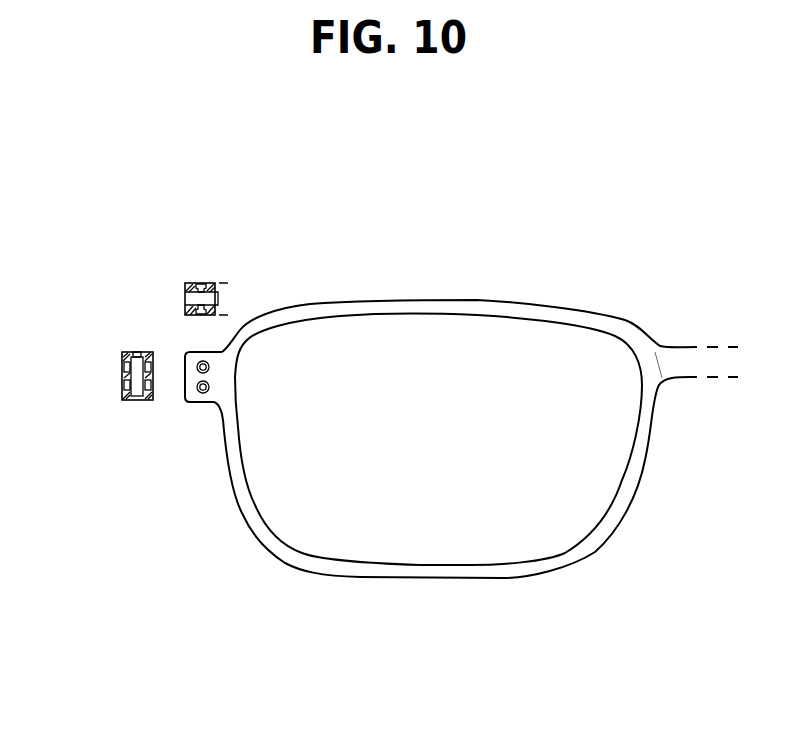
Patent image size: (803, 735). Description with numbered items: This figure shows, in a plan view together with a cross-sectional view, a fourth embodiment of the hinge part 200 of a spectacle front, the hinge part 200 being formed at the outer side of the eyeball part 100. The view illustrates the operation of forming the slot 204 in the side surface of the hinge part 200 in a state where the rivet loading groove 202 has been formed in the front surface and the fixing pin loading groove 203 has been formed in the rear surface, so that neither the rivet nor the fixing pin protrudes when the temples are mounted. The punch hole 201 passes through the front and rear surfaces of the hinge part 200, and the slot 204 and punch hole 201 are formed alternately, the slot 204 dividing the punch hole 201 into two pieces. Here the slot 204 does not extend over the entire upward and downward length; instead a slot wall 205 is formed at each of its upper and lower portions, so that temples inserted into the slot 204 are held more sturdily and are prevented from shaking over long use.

The eyeball part 100 is at (444, 304).
The hinge part 200 is at (194, 397).
The punch hole 201 is at (227, 285).
The rivet loading groove 202 is at (202, 283).
The fixing pin loading groove 203 is at (120, 362).
The slot 204 is at (193, 297).
The slot wall 205 is at (137, 353).